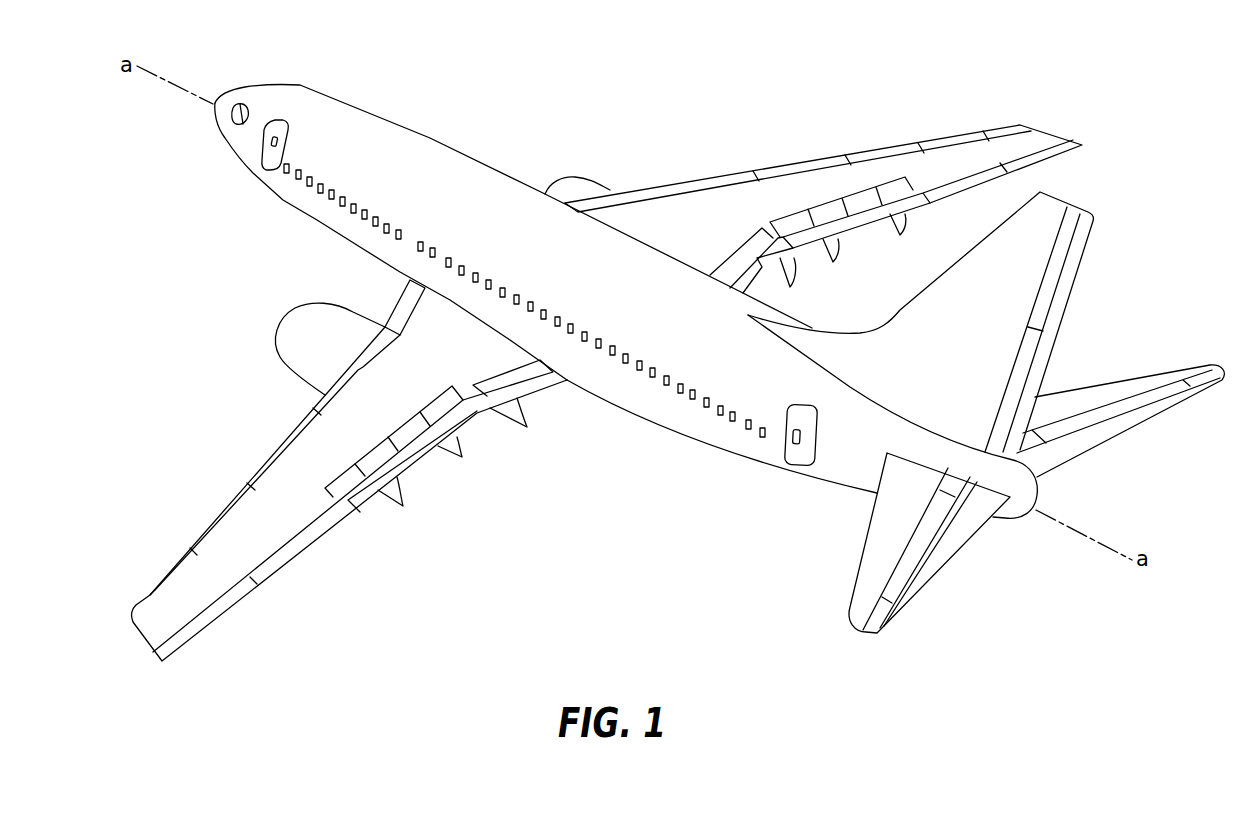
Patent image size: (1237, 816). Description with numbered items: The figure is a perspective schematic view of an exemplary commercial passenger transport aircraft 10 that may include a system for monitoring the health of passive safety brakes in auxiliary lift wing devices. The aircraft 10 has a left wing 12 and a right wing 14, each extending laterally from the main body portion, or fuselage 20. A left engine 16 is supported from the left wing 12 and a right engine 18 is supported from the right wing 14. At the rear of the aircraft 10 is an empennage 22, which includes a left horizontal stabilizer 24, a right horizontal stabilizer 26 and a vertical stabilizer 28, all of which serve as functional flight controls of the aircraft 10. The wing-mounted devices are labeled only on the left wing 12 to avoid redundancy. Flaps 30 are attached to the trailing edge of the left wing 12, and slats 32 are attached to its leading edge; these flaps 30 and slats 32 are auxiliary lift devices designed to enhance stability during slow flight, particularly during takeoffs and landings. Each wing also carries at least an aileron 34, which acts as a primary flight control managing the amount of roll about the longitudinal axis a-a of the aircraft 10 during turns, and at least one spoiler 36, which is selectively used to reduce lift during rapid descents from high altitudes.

The aircraft 10 is at (496, 117).
The left wing 12 is at (145, 630).
The right wing 14 is at (1047, 135).
The left engine 16 is at (308, 317).
The right engine 18 is at (604, 188).
The fuselage 20 is at (373, 128).
The empennage 22 is at (845, 465).
The left horizontal stabilizer 24 is at (860, 615).
The right horizontal stabilizer 26 is at (1158, 372).
The vertical stabilizer 28 is at (1058, 208).
The flaps 30 is at (418, 463).
The slats 32 is at (168, 568).
The aileron 34 is at (213, 622).
The spoiler 36 is at (406, 428).